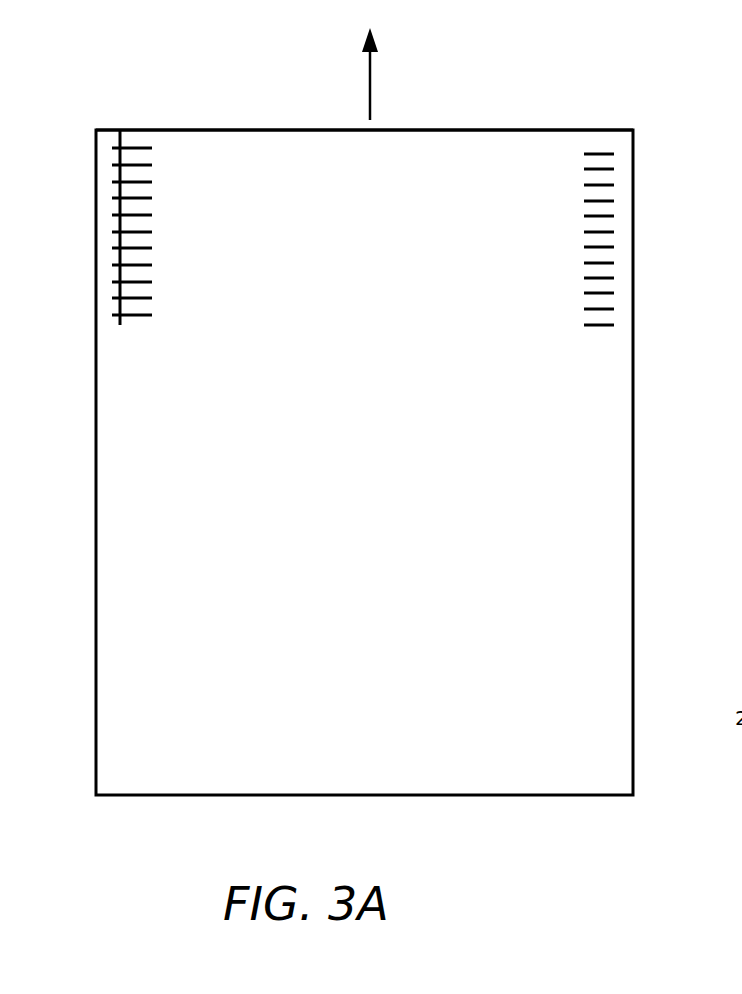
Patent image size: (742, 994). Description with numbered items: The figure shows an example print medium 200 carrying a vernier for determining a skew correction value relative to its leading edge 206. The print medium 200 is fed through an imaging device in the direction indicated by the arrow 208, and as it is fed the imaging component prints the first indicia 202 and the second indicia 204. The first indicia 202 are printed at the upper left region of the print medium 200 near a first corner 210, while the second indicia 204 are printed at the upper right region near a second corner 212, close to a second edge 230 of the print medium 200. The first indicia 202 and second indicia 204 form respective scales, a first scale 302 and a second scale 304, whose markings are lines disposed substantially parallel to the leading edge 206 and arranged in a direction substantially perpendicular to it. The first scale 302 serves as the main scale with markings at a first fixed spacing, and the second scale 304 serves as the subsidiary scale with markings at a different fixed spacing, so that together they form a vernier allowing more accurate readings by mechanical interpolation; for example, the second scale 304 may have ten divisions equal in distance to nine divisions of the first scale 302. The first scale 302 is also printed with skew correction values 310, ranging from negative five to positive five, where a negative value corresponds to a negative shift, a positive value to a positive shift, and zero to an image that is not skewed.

The print medium 200 is at (386, 346).
The first indicia 202 is at (147, 133).
The second indicia 204 is at (570, 158).
The leading edge 206 is at (235, 128).
The arrow 208 is at (370, 83).
The first corner 210 is at (97, 127).
The second corner 212 is at (635, 129).
The second edge 230 is at (633, 455).
The first scale 302 is at (137, 317).
The second scale 304 is at (593, 233).
The skew correction values 310 is at (180, 230).